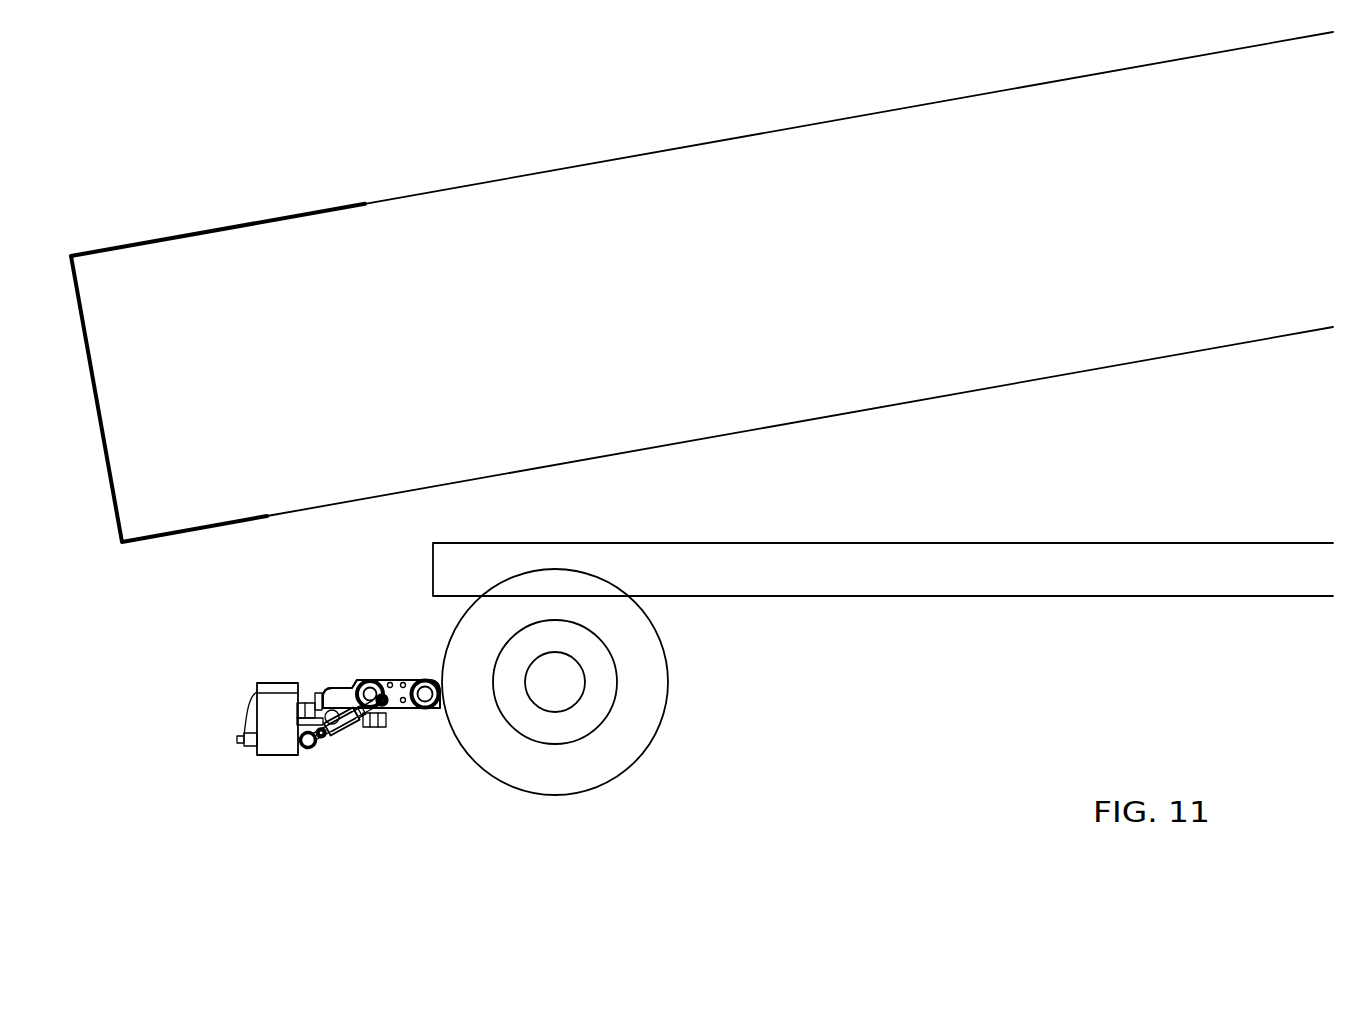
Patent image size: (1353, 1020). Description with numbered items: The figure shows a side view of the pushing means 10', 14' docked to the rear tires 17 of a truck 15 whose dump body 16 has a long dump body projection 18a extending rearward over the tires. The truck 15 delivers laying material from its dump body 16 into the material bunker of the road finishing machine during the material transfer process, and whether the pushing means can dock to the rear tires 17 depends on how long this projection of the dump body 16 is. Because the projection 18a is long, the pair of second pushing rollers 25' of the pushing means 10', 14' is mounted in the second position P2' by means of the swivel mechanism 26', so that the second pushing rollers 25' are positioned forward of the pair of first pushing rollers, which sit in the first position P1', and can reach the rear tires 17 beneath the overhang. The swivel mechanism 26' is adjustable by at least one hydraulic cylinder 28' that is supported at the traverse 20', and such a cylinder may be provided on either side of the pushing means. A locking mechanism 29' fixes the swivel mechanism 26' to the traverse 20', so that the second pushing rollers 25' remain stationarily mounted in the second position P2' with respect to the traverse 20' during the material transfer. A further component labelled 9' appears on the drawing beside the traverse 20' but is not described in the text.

The dump body 16 is at (702, 307).
The long dump body projection 18a is at (298, 524).
The truck 15 is at (960, 648).
The rear tires 17 is at (640, 733).
The actuating cylinder 9' is at (267, 677).
The traverse 20' is at (313, 662).
The pushing means 10' is at (370, 628).
The pushing means 14' is at (370, 628).
The second pushing rollers 25' is at (427, 764).
The first position P1' is at (363, 653).
The second position P2' is at (417, 653).
The hydraulic cylinder 28' is at (344, 771).
The locking mechanism 29' is at (303, 784).
The swivel mechanism 26' is at (389, 779).